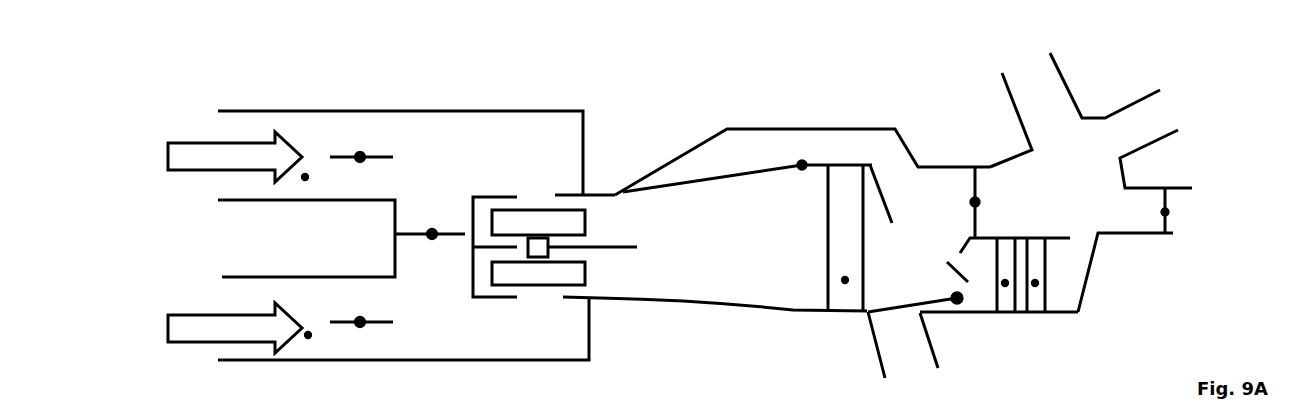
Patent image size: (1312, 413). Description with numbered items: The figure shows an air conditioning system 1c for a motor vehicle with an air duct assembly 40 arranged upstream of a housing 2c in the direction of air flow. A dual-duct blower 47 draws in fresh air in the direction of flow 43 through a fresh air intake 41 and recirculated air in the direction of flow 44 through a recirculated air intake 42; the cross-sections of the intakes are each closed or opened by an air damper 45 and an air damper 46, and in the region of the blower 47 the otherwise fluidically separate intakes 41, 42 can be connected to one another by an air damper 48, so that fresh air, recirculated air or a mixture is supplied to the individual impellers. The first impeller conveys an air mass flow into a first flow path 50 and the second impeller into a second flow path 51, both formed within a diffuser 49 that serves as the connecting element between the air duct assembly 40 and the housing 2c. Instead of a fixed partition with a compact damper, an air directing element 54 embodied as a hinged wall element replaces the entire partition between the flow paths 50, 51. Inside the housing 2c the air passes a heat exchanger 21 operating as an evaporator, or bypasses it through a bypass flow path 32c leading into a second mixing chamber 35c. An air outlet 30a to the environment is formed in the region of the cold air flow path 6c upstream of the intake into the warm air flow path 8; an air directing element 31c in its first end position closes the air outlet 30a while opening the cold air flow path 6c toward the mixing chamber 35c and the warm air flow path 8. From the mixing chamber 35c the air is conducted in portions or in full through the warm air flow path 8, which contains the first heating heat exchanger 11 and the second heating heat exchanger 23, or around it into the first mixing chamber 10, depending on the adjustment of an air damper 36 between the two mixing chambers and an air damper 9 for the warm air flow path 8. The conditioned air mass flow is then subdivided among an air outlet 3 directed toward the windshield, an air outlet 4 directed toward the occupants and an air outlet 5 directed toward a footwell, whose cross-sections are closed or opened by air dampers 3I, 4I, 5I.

The air conditioning system 1c is at (1244, 100).
The housing 2c is at (1007, 155).
The air outlet 3 is at (1103, 89).
The air damper 3I is at (1036, 95).
The air outlet 4 is at (1150, 157).
The air damper 4I is at (1136, 125).
The air outlet 5 is at (1125, 250).
The air damper 5I is at (1165, 212).
The cold air flow path 6c is at (881, 214).
The warm air flow path 8 is at (999, 275).
The air damper warm air flow path 9 is at (963, 281).
The first mixing chamber 10 is at (1070, 187).
The first heating heat exchanger 11 is at (1005, 283).
The evaporator 21 is at (845, 280).
The second heating heat exchanger 23 is at (1035, 283).
The air outlet to environment 30a is at (903, 345).
The air directing element 31c is at (938, 302).
The bypass flow path 32c is at (802, 162).
The second mixing chamber 35c is at (995, 229).
The air damper for mixing chamber 36 is at (975, 202).
The air duct assembly 40 is at (603, 124).
The fresh air intake 41 is at (305, 177).
The recirculated air intake 42 is at (308, 335).
The direction of flow of fresh air 43 is at (258, 155).
The direction of flow of recirculated air 44 is at (258, 327).
The air damper for fresh air intake 45 is at (361, 152).
The air damper for recirculated air intake 46 is at (360, 317).
The dual-duct blower 47 is at (562, 272).
The air damper for intake to impeller 48 is at (433, 229).
The diffuser 49 is at (663, 321).
The first flow path 50 is at (593, 213).
The second flow path 51 is at (597, 280).
The air directing element 54 is at (755, 168).